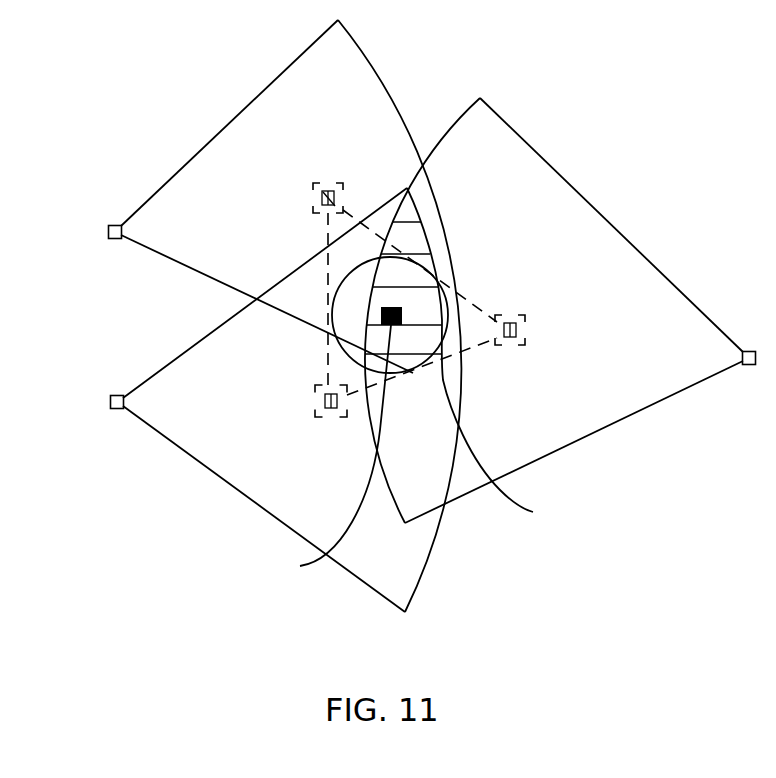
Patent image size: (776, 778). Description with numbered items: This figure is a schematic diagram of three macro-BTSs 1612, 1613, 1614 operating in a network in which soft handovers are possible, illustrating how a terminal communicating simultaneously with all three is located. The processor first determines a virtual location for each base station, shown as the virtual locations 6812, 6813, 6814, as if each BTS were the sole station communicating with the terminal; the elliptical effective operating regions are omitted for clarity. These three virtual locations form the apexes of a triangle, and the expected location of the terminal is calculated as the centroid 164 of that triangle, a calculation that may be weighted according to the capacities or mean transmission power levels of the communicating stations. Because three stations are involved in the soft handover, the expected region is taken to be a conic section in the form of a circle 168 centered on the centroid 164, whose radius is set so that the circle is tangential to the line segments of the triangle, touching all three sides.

The macro-BTS 1613 is at (255, 316).
The macro-BTS 1612 is at (252, 400).
The macro-BTS 1614 is at (560, 310).
The virtual location 6813 is at (296, 171).
The virtual location 6814 is at (551, 301).
The virtual location 6812 is at (307, 433).
The centroid 164 is at (300, 566).
The circle 168 is at (533, 512).